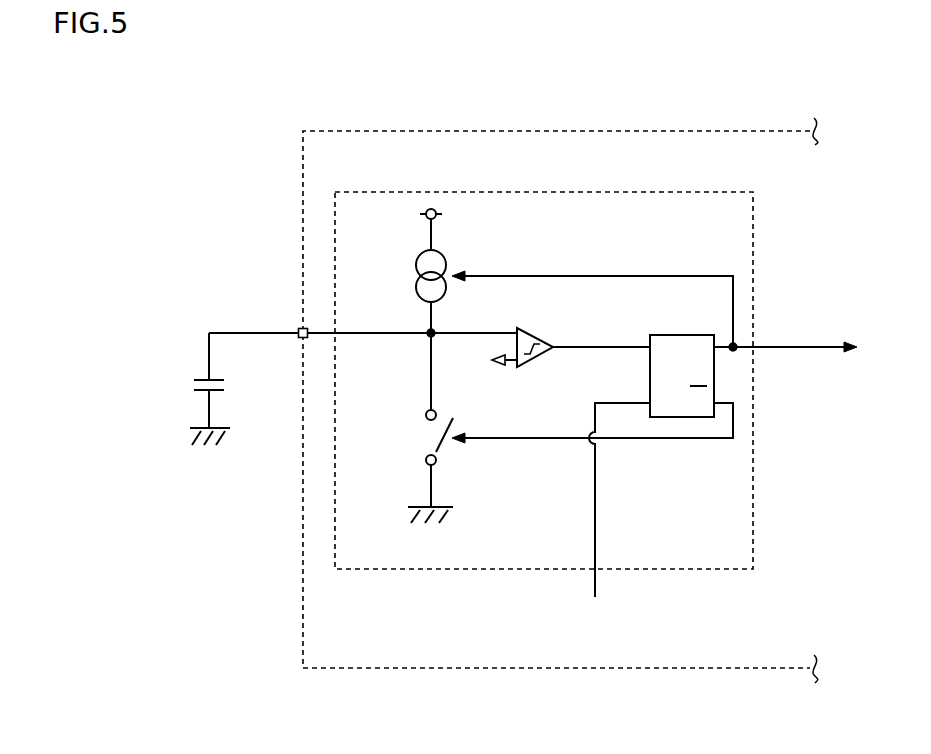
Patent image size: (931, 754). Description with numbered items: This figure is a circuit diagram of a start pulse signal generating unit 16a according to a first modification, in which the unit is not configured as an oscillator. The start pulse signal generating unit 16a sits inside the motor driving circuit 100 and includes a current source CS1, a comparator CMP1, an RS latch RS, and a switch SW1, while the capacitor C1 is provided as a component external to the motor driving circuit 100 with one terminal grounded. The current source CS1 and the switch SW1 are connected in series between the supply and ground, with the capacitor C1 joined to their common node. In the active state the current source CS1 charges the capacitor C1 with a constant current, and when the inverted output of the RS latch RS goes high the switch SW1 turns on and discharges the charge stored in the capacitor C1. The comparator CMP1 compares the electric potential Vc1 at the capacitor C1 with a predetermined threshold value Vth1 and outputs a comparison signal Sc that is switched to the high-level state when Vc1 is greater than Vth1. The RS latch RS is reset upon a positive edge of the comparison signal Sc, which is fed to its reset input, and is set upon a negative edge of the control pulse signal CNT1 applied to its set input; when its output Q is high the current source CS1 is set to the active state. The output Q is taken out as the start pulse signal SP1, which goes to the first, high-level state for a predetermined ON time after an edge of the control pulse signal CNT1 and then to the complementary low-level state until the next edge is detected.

The motor driving circuit 100 is at (368, 131).
The start pulse signal generating unit 16a is at (398, 192).
The current source CS1 is at (473, 238).
The switch SW1 is at (433, 435).
The capacitor C1 is at (194, 389).
The comparator CMP1 is at (557, 319).
The RS latch RS is at (675, 334).
The electric potential at the capacitor Vc1 is at (363, 320).
The threshold value Vth1 is at (504, 385).
The comparison signal Sc is at (601, 333).
The start pulse signal SP1 is at (654, 311).
The control pulse signal CNT1 is at (605, 518).